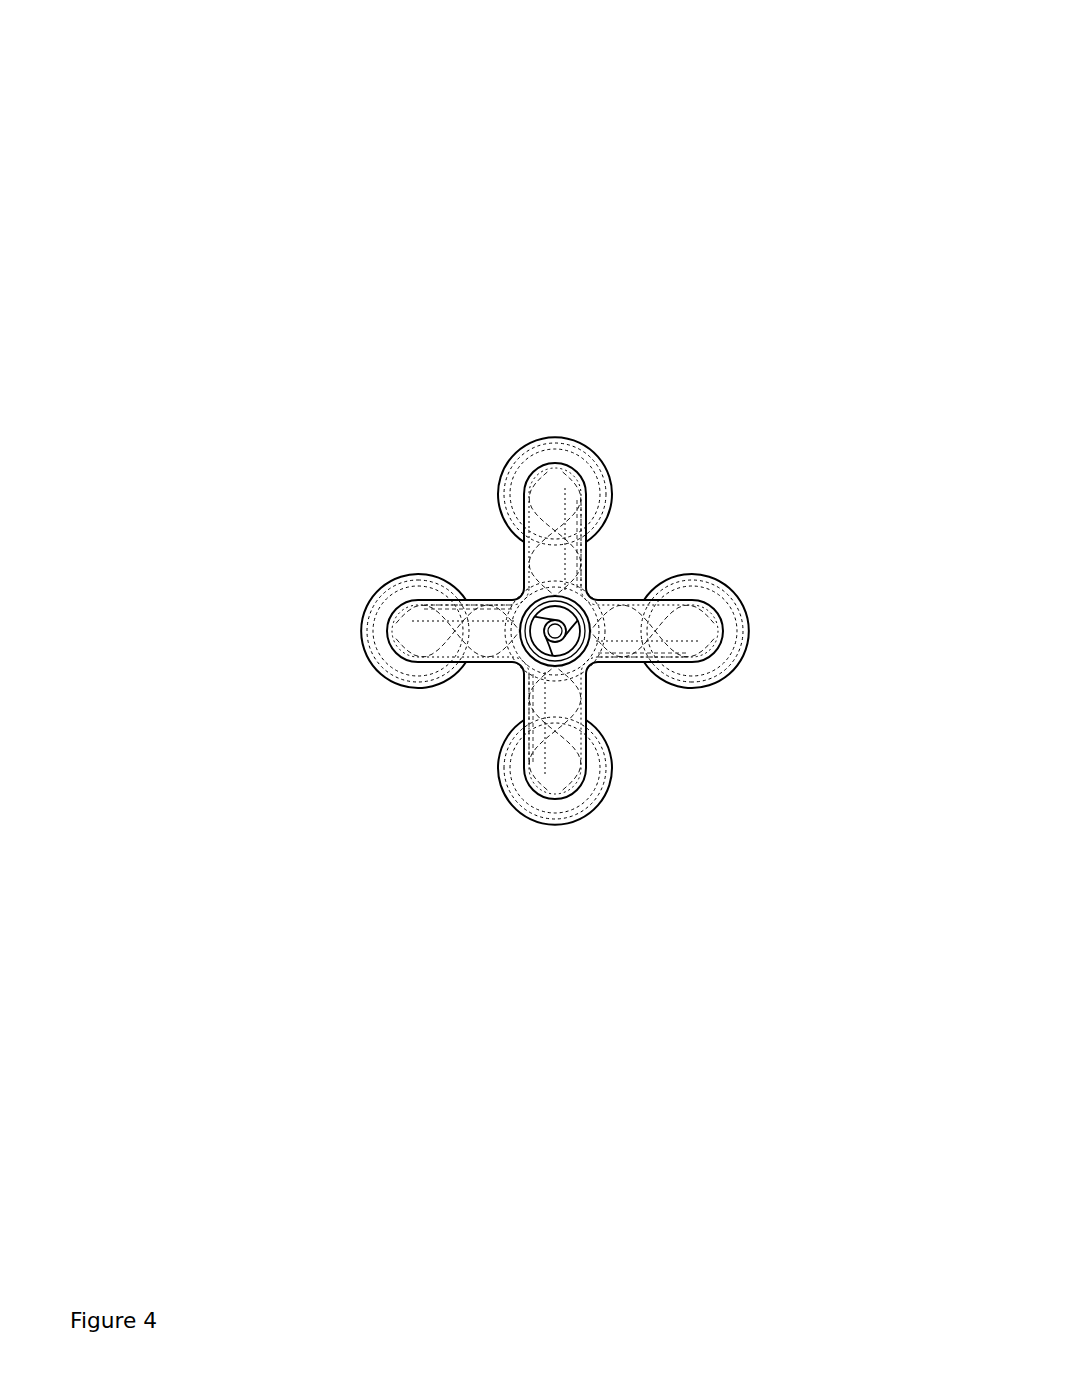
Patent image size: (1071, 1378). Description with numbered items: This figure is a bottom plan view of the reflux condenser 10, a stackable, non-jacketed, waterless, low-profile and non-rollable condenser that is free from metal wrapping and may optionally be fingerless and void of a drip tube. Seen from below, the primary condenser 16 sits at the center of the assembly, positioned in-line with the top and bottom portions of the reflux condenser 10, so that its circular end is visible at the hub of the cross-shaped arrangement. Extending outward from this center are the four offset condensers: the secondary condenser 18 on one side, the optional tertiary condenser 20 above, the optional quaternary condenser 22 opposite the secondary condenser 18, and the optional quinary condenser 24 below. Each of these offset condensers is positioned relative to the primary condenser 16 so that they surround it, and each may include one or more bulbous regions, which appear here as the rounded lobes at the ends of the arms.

The reflux condenser 10 is at (563, 158).
The primary condenser 16 is at (601, 668).
The secondary condenser 18 is at (750, 632).
The tertiary condenser 20 is at (555, 436).
The quaternary condenser 22 is at (358, 631).
The quinary condenser 24 is at (556, 828).